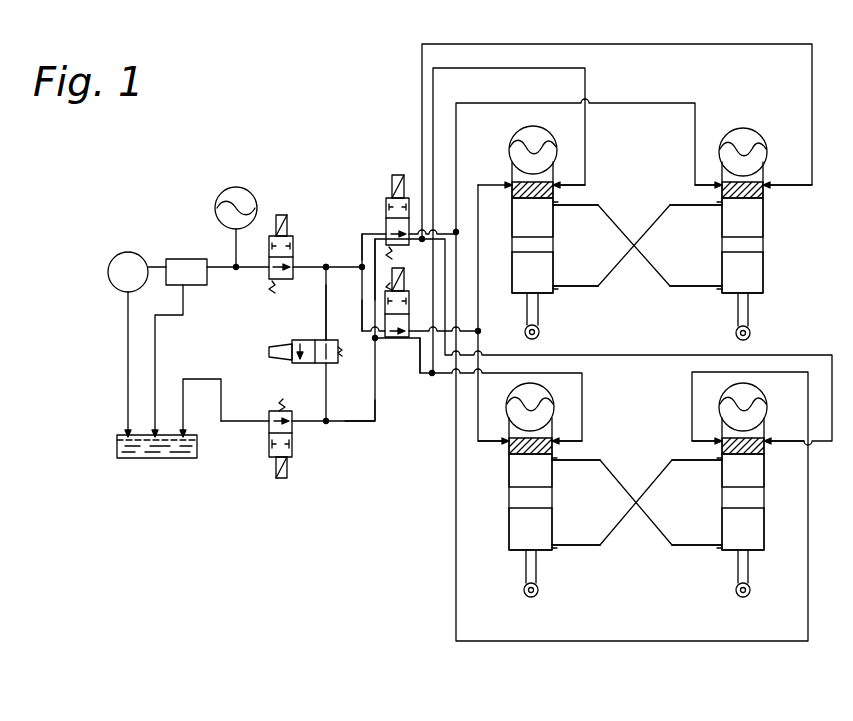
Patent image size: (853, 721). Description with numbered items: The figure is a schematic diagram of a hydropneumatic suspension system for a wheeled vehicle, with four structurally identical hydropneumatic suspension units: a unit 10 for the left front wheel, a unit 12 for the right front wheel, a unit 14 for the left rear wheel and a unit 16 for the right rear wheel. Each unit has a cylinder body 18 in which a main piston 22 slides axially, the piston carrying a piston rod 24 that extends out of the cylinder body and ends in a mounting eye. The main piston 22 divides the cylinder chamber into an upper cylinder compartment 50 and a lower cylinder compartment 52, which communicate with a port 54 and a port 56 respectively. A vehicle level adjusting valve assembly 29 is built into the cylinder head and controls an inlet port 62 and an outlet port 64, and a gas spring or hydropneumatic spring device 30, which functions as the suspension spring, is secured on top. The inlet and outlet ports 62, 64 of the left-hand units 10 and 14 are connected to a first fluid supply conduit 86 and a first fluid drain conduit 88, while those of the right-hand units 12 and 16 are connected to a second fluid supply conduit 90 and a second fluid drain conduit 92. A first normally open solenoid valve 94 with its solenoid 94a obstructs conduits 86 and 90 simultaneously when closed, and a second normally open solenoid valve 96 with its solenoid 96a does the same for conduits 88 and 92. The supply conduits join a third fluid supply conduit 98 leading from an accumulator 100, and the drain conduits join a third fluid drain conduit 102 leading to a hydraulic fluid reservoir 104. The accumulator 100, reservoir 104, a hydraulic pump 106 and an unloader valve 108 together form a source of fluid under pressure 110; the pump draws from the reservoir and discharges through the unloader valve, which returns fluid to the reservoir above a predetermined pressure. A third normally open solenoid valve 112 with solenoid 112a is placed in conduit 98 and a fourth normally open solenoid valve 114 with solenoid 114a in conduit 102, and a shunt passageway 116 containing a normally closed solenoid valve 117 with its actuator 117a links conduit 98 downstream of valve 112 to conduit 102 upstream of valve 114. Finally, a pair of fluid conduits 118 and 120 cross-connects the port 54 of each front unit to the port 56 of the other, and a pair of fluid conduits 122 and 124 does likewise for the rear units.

The hydropneumatic suspension unit 10 is at (556, 231).
The hydropneumatic suspension unit 12 is at (766, 225).
The hydropneumatic suspension unit 14 is at (507, 478).
The hydropneumatic suspension unit 16 is at (766, 480).
The cylinder body 18 is at (554, 270).
The main piston 22 is at (556, 250).
The piston rod 24 is at (540, 320).
The vehicle level adjusting valve assembly 29 is at (553, 182).
The gas spring or hydropneumatic spring device 30 is at (520, 134).
The upper cylinder compartment 50 is at (636, 342).
The lower cylinder compartment 52 is at (512, 274).
The port 54 is at (562, 210).
The port 56 is at (560, 288).
The inlet port 62 is at (508, 196).
The outlet port 64 is at (566, 190).
The first fluid supply conduit 86 is at (362, 332).
The first fluid drain conduit 88 is at (360, 234).
The second fluid supply conduit 90 is at (420, 375).
The second fluid drain conduit 92 is at (375, 238).
The first normally open solenoid valve 94 is at (398, 338).
The solenoid 94a is at (404, 280).
The second normally open solenoid valve 96 is at (384, 198).
The solenoid 96a is at (397, 175).
The third fluid supply conduit 98 is at (324, 265).
The accumulator 100 is at (237, 187).
The third fluid drain conduit 102 is at (370, 421).
The hydraulic fluid reservoir 104 is at (194, 458).
The hydraulic pump 106 is at (130, 252).
The unloader valve 108 is at (183, 259).
The source of fluid under pressure 110 is at (140, 198).
The third normally open solenoid valve 112 is at (268, 279).
The solenoid 112a is at (283, 215).
The fourth normally open solenoid valve 114 is at (266, 455).
The solenoid 114a is at (288, 476).
The shunt passageway 116 is at (324, 318).
The normally closed solenoid valve 117 is at (312, 363).
The valve actuator 117a is at (272, 359).
The fluid conduit 118 is at (668, 278).
The fluid conduit 120 is at (614, 276).
The fluid conduit 122 is at (640, 524).
The fluid conduit 124 is at (650, 482).